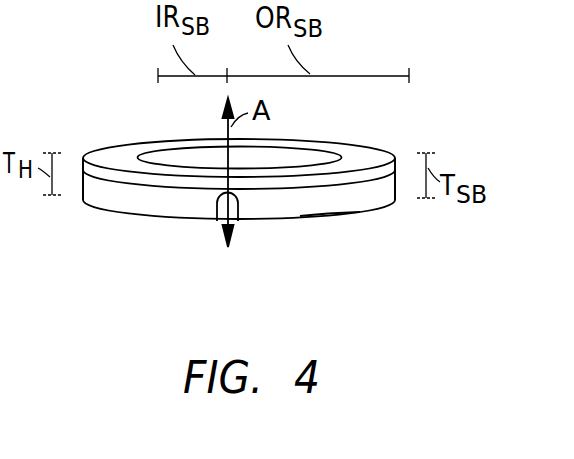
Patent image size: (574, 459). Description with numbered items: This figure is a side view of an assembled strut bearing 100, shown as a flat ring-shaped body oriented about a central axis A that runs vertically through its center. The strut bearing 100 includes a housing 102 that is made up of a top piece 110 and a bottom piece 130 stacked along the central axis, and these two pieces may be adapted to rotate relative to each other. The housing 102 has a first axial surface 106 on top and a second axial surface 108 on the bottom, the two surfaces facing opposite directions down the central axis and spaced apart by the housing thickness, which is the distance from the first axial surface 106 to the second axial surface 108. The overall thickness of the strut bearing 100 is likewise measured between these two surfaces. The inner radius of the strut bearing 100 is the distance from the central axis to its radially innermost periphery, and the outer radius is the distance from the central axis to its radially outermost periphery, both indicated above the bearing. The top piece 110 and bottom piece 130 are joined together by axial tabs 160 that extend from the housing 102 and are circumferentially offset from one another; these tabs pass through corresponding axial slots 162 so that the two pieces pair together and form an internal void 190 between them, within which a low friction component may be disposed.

The strut bearing 100 is at (412, 40).
The housing 102 is at (361, 219).
The first axial surface 106 is at (325, 138).
The second axial surface 108 is at (333, 220).
The top piece 110 is at (396, 164).
The bottom piece 130 is at (396, 198).
The axial tabs 160 is at (83, 196).
The axial slots 162 is at (83, 158).
The internal void 190 is at (222, 196).